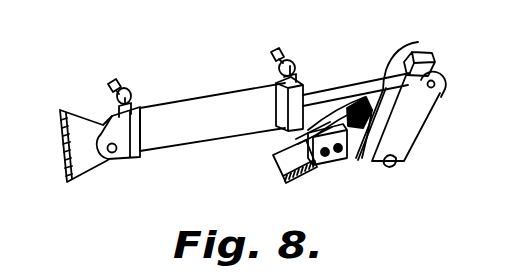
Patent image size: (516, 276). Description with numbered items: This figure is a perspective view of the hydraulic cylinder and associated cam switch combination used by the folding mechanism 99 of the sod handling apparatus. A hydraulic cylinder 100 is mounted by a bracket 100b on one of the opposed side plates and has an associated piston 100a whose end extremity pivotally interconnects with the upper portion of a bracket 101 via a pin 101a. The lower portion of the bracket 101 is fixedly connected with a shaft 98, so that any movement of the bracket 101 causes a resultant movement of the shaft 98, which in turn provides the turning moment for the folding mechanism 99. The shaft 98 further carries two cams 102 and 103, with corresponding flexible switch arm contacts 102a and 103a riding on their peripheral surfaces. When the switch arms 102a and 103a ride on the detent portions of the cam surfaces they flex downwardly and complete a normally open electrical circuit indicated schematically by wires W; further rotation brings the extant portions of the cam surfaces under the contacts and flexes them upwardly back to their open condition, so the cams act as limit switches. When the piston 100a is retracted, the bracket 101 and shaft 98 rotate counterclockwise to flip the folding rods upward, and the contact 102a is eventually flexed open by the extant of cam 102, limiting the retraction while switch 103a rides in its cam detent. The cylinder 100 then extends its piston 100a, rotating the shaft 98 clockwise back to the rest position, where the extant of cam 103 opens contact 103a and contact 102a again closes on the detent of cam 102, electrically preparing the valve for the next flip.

The shaft 98 is at (400, 158).
The folding mechanism 99 is at (237, 151).
The hydraulic cylinder 100 is at (161, 115).
The piston 100a is at (315, 90).
The bracket 100b is at (133, 152).
The bracket 101 is at (434, 121).
The pin 101a is at (442, 82).
The cam 102 is at (403, 91).
The switch arm contact 102a is at (348, 92).
The cam 103 is at (364, 152).
The switch arm contact 103a is at (347, 138).
The wires W is at (289, 141).